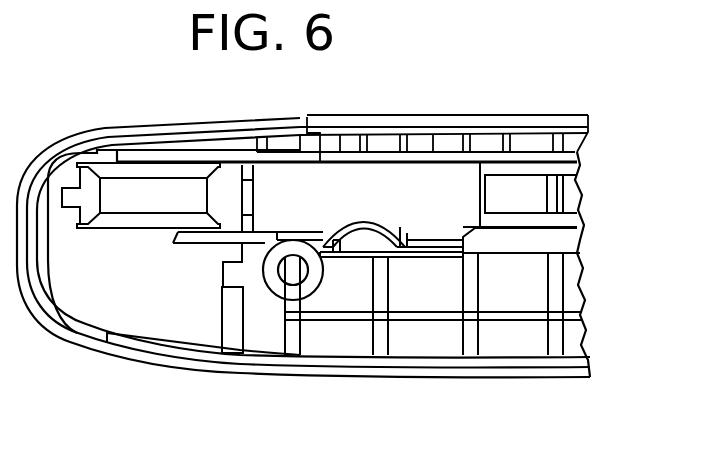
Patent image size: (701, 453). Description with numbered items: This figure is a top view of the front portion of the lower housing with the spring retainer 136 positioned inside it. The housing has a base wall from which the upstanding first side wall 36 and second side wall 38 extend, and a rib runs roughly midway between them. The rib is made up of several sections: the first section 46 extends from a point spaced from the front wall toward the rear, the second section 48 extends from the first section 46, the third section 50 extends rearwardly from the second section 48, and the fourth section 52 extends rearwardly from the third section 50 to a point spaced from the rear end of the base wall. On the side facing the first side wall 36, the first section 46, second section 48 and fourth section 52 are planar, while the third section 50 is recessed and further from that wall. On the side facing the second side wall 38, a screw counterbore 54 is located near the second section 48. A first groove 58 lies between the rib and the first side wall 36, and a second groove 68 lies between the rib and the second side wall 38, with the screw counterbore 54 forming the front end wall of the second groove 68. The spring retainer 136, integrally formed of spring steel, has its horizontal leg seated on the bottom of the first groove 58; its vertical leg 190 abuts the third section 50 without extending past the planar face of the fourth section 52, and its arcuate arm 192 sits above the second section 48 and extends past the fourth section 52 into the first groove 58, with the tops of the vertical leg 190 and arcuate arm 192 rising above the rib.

The first side wall 36 is at (475, 122).
The second side wall 38 is at (352, 375).
The first section 46 is at (207, 240).
The second section 48 is at (315, 232).
The third section 50 is at (440, 254).
The fourth section 52 is at (552, 242).
The screw counterbore 54 is at (283, 292).
The first groove 58 is at (537, 197).
The second groove 68 is at (538, 283).
The spring retainer 136 is at (400, 258).
The vertical leg 190 is at (440, 240).
The arcuate arm 192 is at (362, 222).